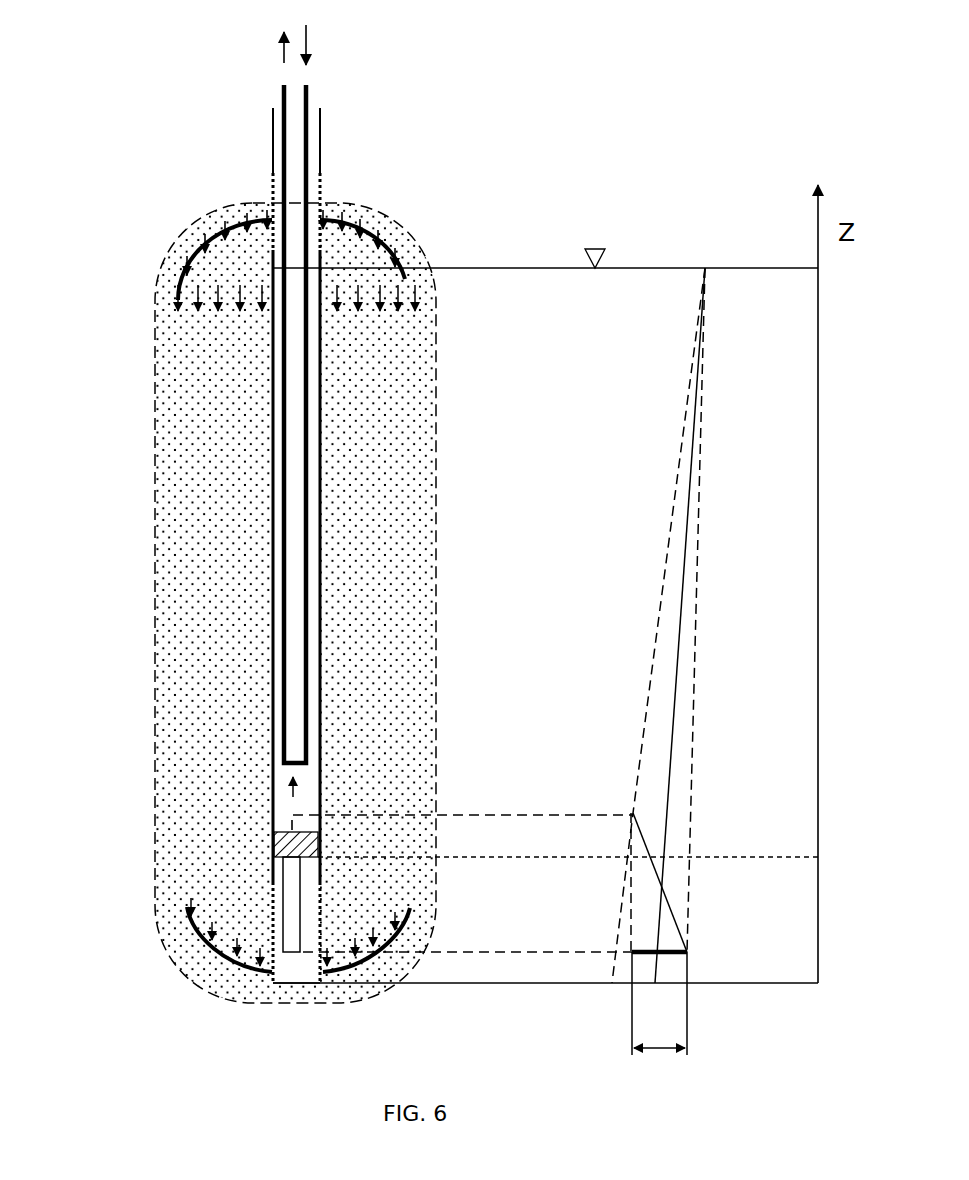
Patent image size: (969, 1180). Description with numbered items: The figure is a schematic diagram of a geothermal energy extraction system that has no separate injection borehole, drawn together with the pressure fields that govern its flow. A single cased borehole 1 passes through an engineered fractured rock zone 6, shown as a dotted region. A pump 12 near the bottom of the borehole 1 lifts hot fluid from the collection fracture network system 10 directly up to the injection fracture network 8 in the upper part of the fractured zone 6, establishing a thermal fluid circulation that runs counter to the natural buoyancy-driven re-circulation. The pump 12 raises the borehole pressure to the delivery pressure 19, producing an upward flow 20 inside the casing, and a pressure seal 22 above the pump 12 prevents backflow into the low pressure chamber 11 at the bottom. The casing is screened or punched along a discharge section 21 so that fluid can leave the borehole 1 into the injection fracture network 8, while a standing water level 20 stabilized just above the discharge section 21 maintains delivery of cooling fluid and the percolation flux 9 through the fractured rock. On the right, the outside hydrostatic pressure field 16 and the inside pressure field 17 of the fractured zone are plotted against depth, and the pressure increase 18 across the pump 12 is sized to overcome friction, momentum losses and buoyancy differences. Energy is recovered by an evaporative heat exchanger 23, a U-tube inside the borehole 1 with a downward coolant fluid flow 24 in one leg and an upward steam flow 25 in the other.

The borehole 1 is at (272, 758).
The fractured rock zone 6 is at (197, 628).
The injection fracture network 8 is at (198, 245).
The percolation flux 9 is at (178, 295).
The collection fracture network system 10 is at (210, 945).
The low pressure chamber 11 is at (288, 962).
The pump 12 is at (290, 882).
The outside hydrostatic pressure field 16 is at (673, 725).
The inside pressure field 17 is at (690, 805).
The pressure increase 18 is at (667, 1047).
The delivery pressure 19 is at (640, 753).
The upward flow / standing water level 20 is at (568, 268).
The discharge section 21 is at (268, 205).
The pressure seal 22 is at (272, 842).
The evaporative heat exchanger 23 is at (292, 583).
The downward coolant fluid flow 24 is at (312, 47).
The upward steam flow 25 is at (282, 52).